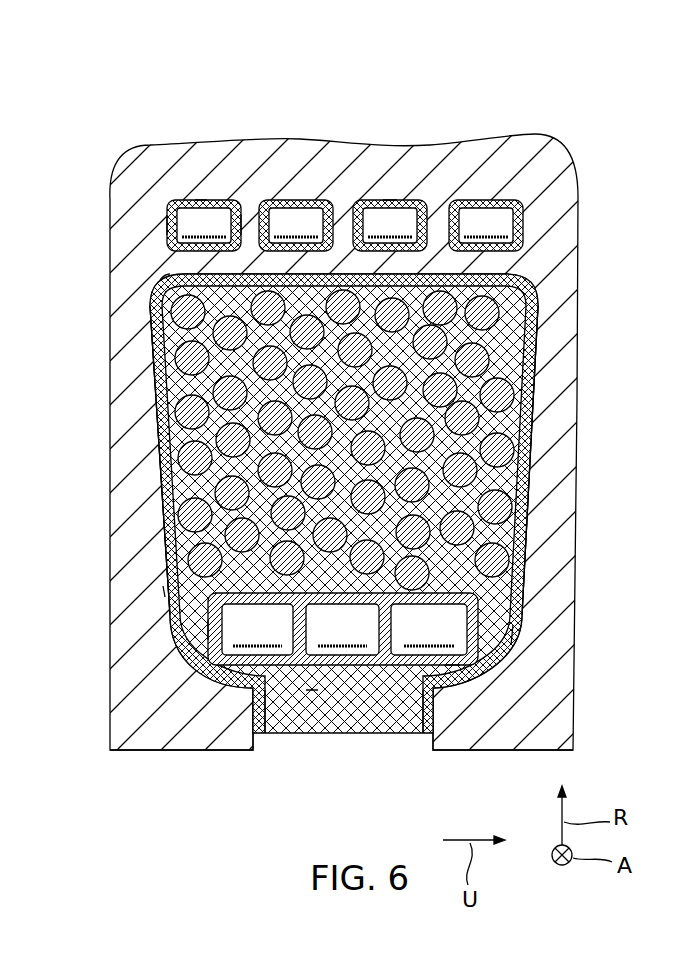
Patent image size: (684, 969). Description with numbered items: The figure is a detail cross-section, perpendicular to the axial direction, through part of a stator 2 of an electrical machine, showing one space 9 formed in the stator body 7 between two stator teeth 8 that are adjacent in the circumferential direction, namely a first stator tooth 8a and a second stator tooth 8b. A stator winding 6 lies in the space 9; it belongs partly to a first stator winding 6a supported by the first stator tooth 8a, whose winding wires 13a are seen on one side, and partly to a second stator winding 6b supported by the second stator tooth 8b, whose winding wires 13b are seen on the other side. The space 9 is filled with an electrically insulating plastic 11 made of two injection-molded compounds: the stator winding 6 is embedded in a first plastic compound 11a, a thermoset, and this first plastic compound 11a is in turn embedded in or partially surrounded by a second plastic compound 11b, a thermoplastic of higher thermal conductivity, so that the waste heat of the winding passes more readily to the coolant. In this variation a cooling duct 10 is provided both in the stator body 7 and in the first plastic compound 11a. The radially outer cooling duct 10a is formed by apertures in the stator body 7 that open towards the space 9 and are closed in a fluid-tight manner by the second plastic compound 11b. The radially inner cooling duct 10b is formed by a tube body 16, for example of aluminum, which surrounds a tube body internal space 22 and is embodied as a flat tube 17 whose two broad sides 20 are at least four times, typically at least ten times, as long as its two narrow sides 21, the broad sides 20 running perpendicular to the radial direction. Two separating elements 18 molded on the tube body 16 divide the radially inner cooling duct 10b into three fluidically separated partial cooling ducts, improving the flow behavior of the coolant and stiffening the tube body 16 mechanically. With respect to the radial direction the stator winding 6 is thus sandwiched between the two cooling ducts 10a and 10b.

The stator 2 is at (346, 427).
The stator body 7 is at (146, 162).
The stator teeth 8 is at (353, 601).
The first stator tooth 8a is at (135, 464).
The second stator tooth 8b is at (548, 535).
The stator winding 6 is at (359, 526).
The first stator winding 6a is at (168, 559).
The second stator winding 6b is at (531, 393).
The space 9 is at (500, 482).
The electrically insulating plastic 11 is at (346, 450).
The first plastic compound 11a is at (520, 303).
The second plastic compound 11b is at (168, 210).
The winding wires 13a is at (172, 370).
The winding wires 13b is at (505, 378).
The cooling duct 10 is at (344, 450).
The radially outer cooling duct 10a is at (540, 225).
The radially inner cooling duct 10b is at (368, 706).
The tube body 16 is at (368, 706).
The flat tube 17 is at (397, 684).
The separating elements 18 is at (268, 700).
The broad sides 20 is at (201, 200).
The narrow sides 21 is at (241, 222).
The tube body internal space 22 is at (392, 188).